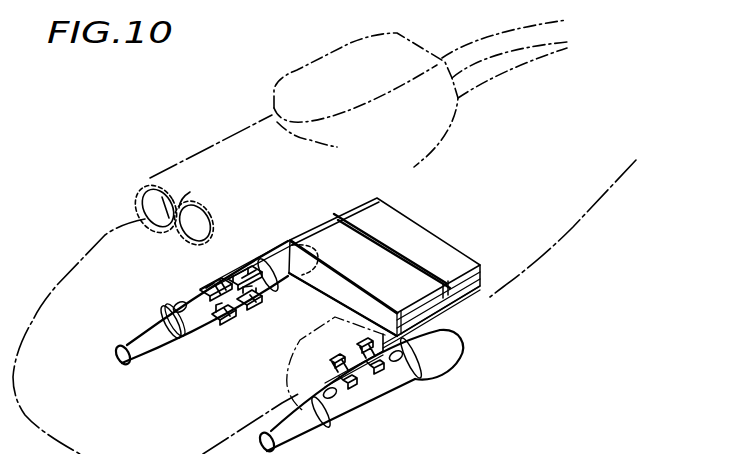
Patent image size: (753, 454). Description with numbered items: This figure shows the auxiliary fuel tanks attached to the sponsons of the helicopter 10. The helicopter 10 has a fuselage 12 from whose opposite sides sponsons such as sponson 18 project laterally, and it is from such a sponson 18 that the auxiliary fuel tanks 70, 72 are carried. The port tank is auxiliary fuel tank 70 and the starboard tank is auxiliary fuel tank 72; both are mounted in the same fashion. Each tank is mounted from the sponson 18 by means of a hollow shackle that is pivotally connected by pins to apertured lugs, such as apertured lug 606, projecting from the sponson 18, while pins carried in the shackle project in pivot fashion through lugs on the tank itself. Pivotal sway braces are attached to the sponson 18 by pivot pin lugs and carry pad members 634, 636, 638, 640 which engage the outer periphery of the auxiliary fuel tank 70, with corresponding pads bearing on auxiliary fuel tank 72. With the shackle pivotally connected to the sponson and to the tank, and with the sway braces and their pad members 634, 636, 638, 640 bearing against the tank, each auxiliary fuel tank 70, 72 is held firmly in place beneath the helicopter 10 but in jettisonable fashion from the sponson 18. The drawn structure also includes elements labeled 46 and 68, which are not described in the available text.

The helicopter 10 is at (152, 146).
The fuselage 12 is at (424, 93).
The sponson 18 is at (288, 378).
The mounting plate 46 is at (351, 294).
The rack 68 is at (437, 252).
The auxiliary fuel tank 70 is at (450, 350).
The auxiliary fuel tank 72 is at (135, 328).
The apertured lug 606 is at (376, 447).
The pad member 634 is at (215, 320).
The pad member 636 is at (198, 288).
The pad member 638 is at (242, 312).
The pad member 640 is at (227, 277).